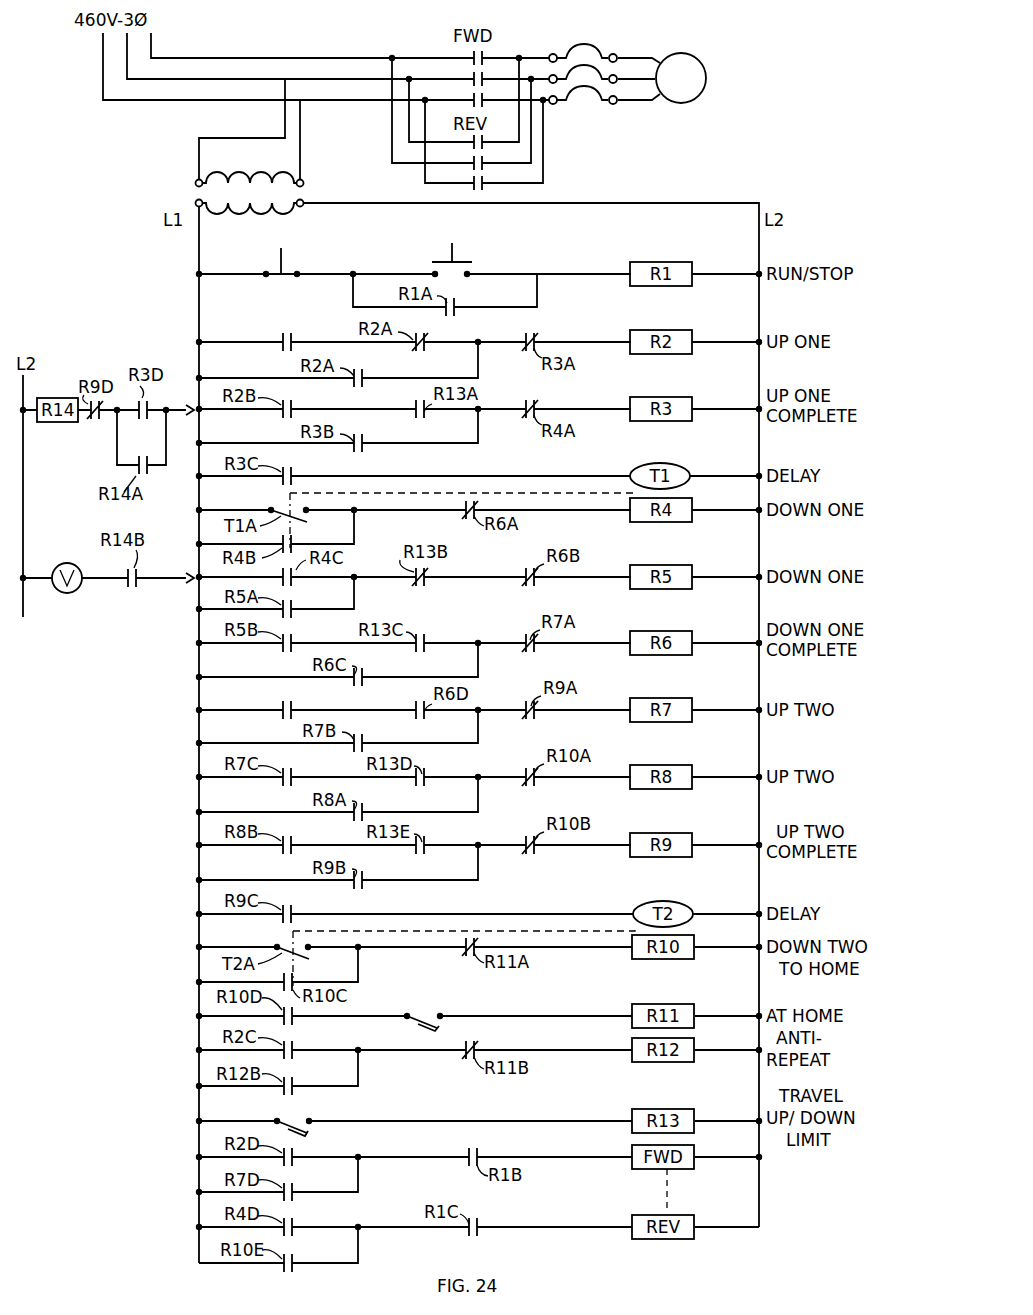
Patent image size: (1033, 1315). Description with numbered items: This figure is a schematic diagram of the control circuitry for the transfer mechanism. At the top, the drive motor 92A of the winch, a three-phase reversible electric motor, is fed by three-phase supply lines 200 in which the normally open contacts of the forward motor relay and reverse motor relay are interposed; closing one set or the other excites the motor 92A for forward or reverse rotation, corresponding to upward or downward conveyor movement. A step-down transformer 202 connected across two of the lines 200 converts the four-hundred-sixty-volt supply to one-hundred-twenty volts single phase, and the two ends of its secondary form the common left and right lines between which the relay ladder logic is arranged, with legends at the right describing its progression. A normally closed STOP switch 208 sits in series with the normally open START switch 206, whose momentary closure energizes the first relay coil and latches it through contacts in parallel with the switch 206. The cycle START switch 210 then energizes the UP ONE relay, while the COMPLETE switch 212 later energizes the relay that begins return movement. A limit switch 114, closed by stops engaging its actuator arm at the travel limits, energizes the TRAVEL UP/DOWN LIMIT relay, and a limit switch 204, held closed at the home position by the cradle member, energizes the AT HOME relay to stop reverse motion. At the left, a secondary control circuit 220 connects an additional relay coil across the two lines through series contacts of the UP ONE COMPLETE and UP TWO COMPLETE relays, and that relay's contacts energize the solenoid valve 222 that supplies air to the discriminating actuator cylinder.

The three-phase supply lines 200 is at (250, 100).
The step-down transformer 202 is at (214, 180).
The drive motor 92A is at (706, 70).
The STOP switch 208 is at (283, 258).
The START switch 206 is at (470, 264).
The cycle START switch 210 is at (281, 338).
The COMPLETE switch 212 is at (281, 705).
The limit switch 204 is at (414, 1018).
The limit switch 114 is at (293, 1122).
The secondary control circuit 220 is at (74, 372).
The solenoid valve 222 is at (72, 592).